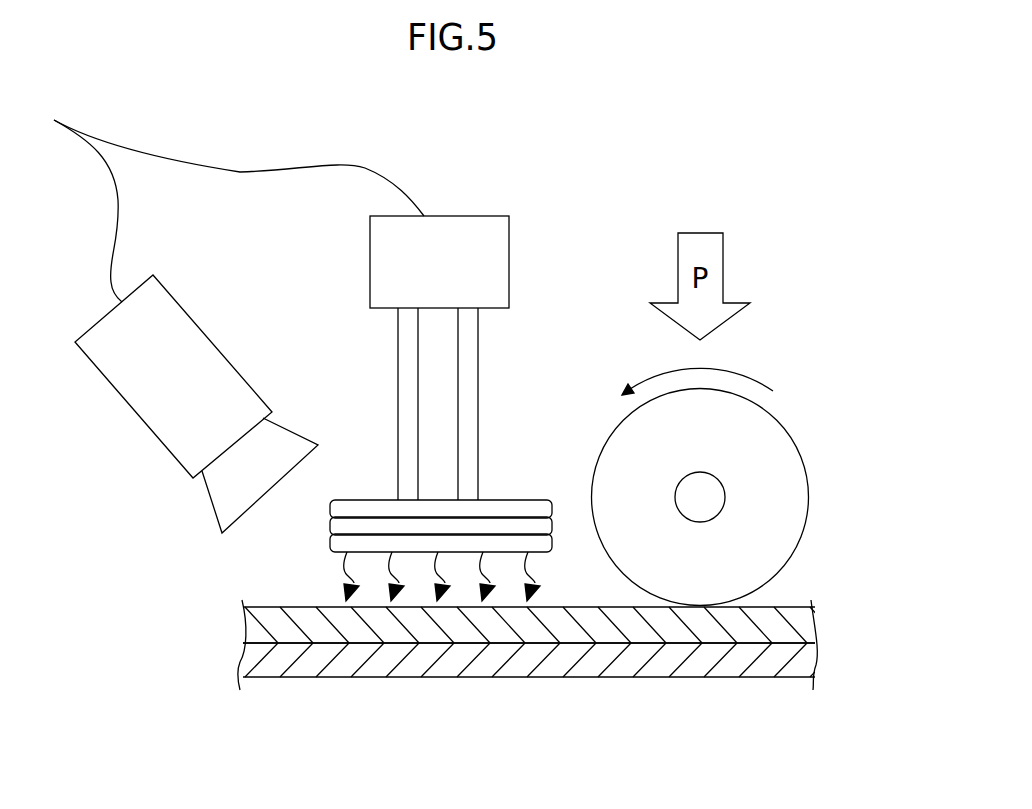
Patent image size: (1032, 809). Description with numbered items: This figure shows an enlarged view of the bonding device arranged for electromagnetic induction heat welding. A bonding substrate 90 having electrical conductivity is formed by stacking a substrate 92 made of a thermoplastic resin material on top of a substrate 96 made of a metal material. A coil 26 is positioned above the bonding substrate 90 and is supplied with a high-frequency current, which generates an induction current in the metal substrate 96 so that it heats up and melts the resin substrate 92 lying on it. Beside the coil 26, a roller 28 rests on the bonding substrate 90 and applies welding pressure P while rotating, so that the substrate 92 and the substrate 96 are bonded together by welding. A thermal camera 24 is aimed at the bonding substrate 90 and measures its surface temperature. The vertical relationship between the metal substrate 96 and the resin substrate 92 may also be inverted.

The thermal camera 24 is at (200, 330).
The coil 26 is at (503, 500).
The roller 28 is at (795, 442).
The bonding substrate 90 is at (528, 645).
The substrate 92 is at (778, 607).
The substrate 96 is at (700, 668).